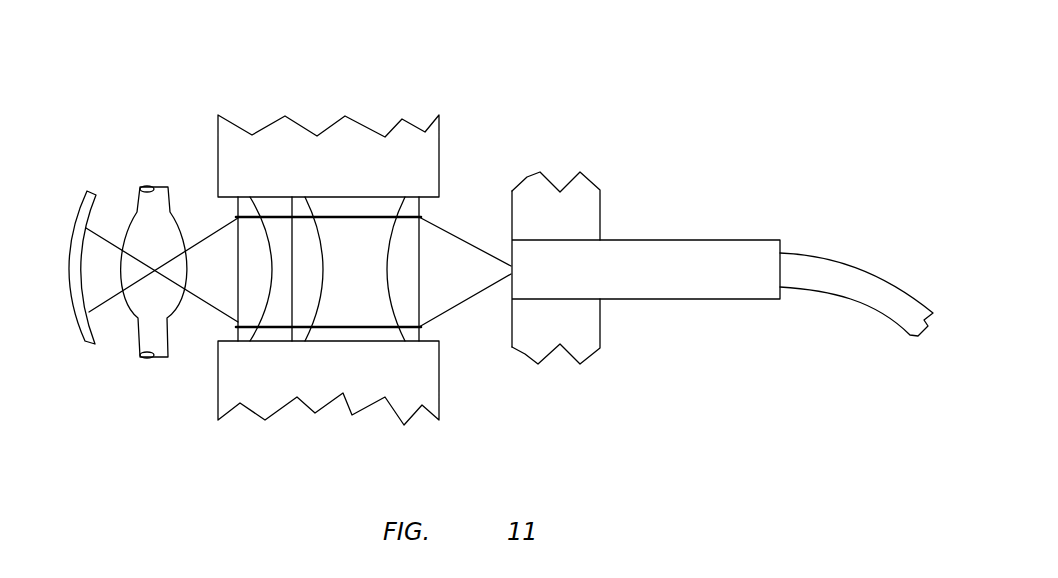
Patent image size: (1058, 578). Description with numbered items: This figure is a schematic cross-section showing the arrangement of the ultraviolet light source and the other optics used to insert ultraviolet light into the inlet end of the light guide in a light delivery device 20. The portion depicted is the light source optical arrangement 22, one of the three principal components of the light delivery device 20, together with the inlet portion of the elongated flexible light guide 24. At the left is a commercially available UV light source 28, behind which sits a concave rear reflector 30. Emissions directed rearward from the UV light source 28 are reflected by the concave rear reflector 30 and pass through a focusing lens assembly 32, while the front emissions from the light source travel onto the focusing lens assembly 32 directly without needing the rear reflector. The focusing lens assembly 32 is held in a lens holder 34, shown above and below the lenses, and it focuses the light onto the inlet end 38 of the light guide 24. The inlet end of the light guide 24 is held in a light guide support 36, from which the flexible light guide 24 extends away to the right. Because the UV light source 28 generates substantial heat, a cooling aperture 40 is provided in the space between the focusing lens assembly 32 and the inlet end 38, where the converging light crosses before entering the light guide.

The light delivery device 20 is at (692, 193).
The light source optical arrangement 22 is at (378, 219).
The elongated flexible light guide 24 is at (877, 270).
The UV light source 28 is at (140, 189).
The concave rear reflector 30 is at (80, 202).
The focusing lens assembly 32 is at (369, 284).
The lens holder 34 is at (440, 158).
The light guide support 36 is at (600, 205).
The inlet end 38 is at (511, 240).
The cooling aperture 40 is at (495, 347).